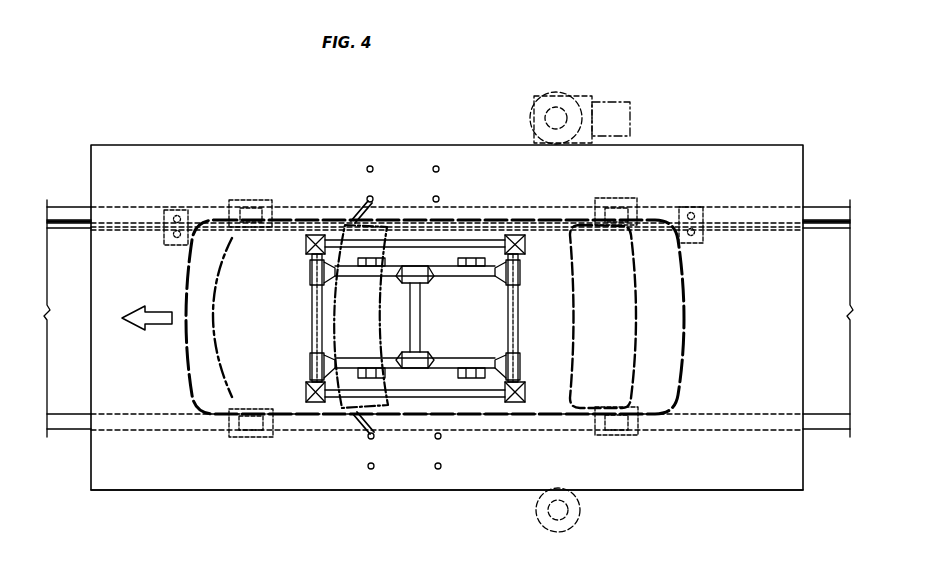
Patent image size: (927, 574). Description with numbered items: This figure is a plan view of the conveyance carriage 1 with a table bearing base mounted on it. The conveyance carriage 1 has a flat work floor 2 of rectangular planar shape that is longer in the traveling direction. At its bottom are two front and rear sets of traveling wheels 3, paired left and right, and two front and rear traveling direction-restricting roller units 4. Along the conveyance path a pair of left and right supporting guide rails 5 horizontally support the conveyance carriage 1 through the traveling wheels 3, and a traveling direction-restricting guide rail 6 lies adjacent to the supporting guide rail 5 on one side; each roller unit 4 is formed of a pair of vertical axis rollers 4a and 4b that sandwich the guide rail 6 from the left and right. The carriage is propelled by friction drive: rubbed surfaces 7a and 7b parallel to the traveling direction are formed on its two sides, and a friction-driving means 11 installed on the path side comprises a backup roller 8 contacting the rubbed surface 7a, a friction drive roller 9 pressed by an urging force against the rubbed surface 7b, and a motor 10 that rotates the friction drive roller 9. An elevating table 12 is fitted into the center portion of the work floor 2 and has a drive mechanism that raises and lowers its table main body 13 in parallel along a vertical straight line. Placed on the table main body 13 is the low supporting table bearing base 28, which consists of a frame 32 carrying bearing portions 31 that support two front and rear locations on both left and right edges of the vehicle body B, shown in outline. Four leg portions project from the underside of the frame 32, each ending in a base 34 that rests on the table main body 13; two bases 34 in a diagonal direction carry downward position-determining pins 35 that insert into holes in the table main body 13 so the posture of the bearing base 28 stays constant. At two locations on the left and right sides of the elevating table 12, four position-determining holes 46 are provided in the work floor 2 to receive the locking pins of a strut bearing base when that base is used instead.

The conveyance carriage 1 is at (735, 144).
The flat work floor 2 is at (728, 377).
The traveling wheels 3 is at (251, 208).
The traveling direction-restricting roller unit 4 is at (182, 207).
The vertical axis roller 4a is at (176, 240).
The vertical axis roller 4b is at (172, 218).
The supporting guide rail 5 is at (65, 213).
The traveling direction-restricting guide rail 6 is at (72, 229).
The rubbed surface 7a is at (625, 491).
The rubbed surface 7b is at (518, 144).
The backup roller 8 is at (550, 532).
The friction drive roller 9 is at (560, 102).
The motor 10 is at (610, 108).
The friction-driving means 11 is at (555, 93).
The elevating table 12 is at (470, 243).
The table main body 13 is at (477, 340).
The low supporting table bearing base 28 is at (311, 327).
The bearing portions 31 is at (306, 245).
The frame 32 is at (312, 322).
The bases 34 is at (381, 268).
The position-determining pins 35 is at (470, 268).
The position-determining holes 46 is at (367, 198).
The vehicle body B is at (680, 318).